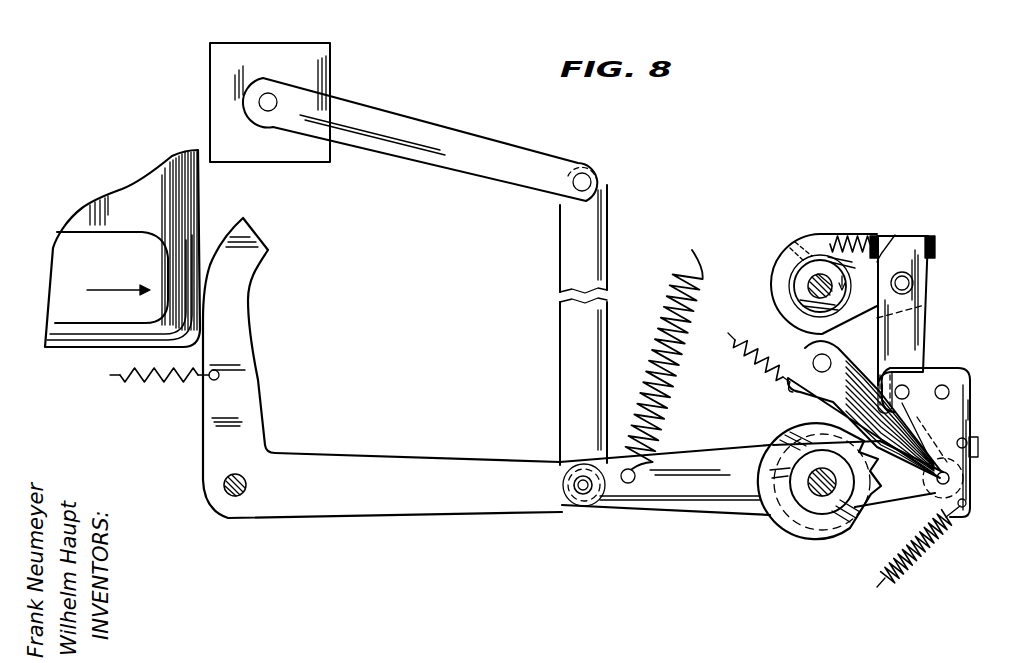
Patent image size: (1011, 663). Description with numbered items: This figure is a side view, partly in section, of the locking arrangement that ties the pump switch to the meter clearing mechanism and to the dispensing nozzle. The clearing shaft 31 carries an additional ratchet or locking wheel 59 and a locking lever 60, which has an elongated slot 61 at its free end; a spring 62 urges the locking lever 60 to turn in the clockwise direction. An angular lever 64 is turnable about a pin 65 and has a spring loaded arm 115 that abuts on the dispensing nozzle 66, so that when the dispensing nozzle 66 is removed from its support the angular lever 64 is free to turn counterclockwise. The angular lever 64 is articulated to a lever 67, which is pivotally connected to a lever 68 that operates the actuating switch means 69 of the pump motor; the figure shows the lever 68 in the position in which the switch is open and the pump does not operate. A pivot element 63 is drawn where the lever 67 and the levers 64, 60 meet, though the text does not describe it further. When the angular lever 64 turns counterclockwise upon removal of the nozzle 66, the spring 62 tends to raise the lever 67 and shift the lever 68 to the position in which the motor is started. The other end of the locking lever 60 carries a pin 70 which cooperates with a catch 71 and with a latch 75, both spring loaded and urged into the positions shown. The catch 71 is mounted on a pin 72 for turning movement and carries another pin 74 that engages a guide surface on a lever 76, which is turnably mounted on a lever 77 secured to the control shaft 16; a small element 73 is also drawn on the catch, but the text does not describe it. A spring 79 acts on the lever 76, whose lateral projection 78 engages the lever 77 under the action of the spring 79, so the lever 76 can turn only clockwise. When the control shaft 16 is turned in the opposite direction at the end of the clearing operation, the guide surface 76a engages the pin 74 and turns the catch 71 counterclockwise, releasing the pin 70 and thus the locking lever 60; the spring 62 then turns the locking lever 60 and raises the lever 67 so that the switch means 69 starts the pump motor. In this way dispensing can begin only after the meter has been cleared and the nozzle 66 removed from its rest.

The control shaft 16 is at (808, 290).
The clearing shaft 31 is at (822, 497).
The ratchet or locking wheel 59 is at (786, 478).
The locking lever 60 is at (700, 502).
The elongated slot 61 is at (572, 478).
The spring 62 is at (668, 400).
The pivot pin 63 is at (583, 494).
The angular lever 64 is at (432, 502).
The pin 65 is at (236, 497).
The dispensing nozzle 66 is at (190, 156).
The lever 67 is at (555, 300).
The lever 68 is at (445, 163).
The actuating switch means 69 is at (298, 152).
The pin 70 is at (935, 490).
The catch 71 is at (962, 408).
The pin 72 is at (950, 395).
The stop tab 73 is at (979, 447).
The pin 74 is at (922, 372).
The latch 75 is at (840, 396).
The lever 76 is at (905, 313).
The guide surface 76a is at (895, 372).
The lever 77 is at (878, 265).
The lateral projection 78 is at (937, 244).
The spring 79 is at (853, 240).
The spring loaded arm 115 is at (172, 382).